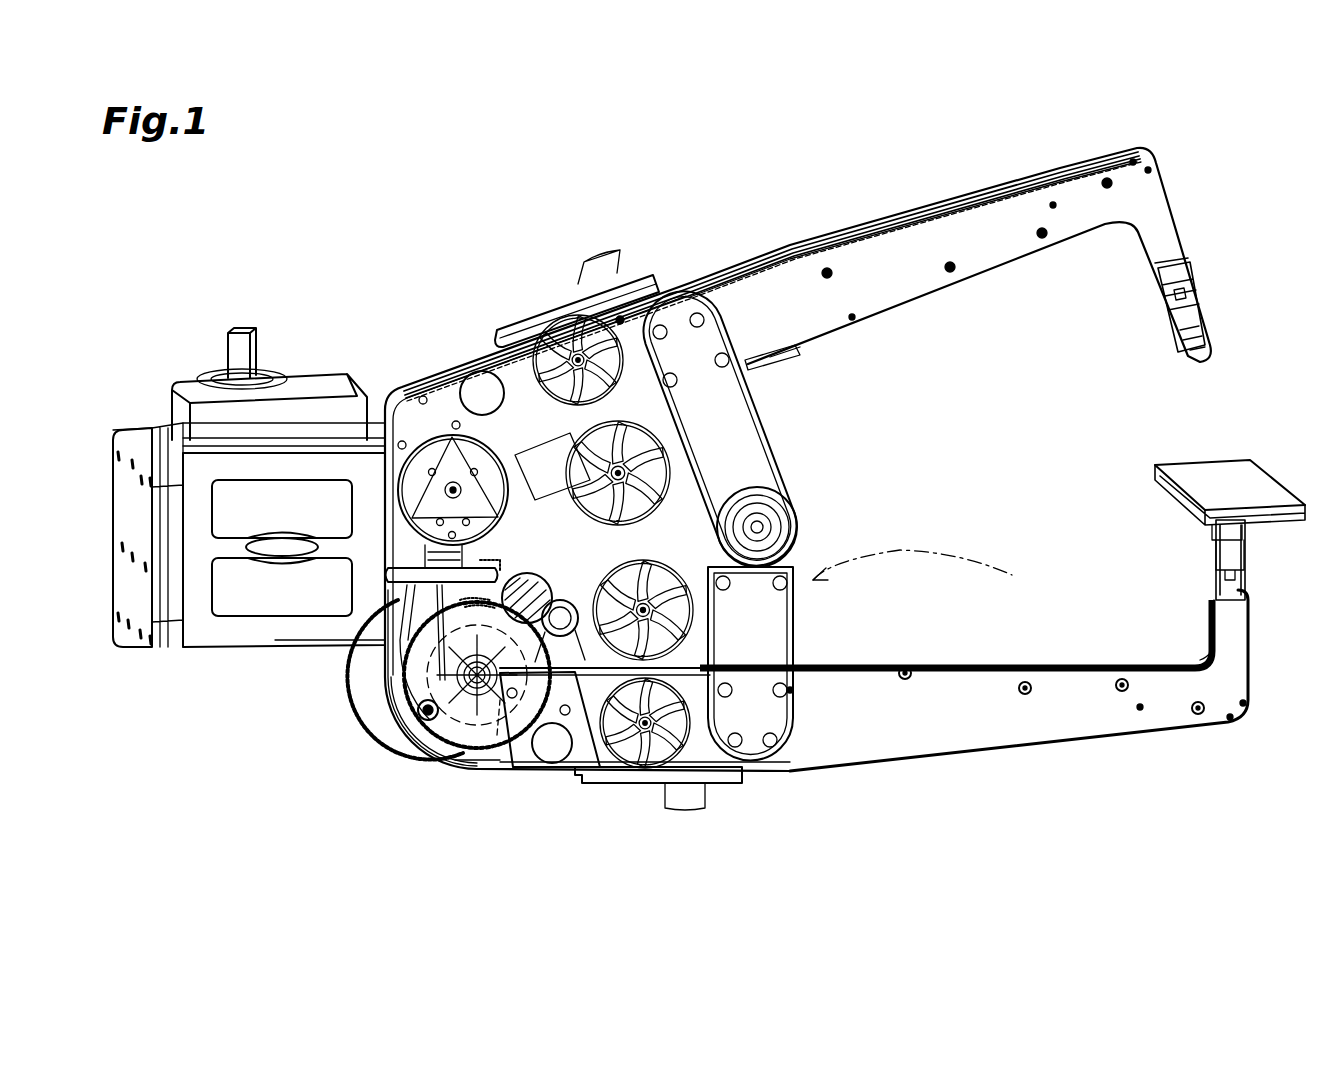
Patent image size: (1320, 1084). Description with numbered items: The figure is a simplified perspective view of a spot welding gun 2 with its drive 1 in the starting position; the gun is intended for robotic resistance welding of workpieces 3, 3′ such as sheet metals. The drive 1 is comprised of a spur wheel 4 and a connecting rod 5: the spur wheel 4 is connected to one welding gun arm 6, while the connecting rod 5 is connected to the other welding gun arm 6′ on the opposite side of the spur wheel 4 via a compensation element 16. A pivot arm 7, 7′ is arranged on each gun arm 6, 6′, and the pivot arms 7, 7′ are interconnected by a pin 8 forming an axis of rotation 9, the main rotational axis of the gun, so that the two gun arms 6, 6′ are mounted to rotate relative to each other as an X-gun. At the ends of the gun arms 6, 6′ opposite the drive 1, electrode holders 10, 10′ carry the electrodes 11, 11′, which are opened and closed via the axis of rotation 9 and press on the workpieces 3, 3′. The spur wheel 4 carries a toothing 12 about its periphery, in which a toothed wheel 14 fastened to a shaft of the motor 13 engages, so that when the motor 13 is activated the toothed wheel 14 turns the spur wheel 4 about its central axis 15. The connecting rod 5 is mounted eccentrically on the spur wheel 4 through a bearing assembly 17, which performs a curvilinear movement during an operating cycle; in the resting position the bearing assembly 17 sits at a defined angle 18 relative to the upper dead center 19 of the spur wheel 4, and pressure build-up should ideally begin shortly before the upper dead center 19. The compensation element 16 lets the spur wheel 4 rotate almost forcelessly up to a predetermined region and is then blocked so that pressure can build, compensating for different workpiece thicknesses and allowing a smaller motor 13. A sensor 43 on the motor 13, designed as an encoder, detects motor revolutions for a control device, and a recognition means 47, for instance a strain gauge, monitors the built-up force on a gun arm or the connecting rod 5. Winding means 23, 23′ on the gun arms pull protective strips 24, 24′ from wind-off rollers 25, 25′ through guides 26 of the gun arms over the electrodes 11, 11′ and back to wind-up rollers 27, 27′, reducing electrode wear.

The drive 1 is at (383, 368).
The spot welding gun 2 is at (380, 265).
The workpiece 3 is at (1203, 500).
The workpiece 3′ is at (1213, 478).
The spur wheel 4 is at (452, 733).
The connecting rod 5 is at (380, 628).
The welding gun arm 6 is at (973, 712).
The welding gun arm 6′ is at (886, 255).
The pivot arm 7 is at (757, 708).
The pivot arm 7′ is at (703, 385).
The pin 8 is at (770, 520).
The axis of rotation 9 is at (925, 575).
The electrode holder 10 is at (1228, 563).
The electrode holder 10′ is at (1172, 310).
The electrode 11 is at (1215, 530).
The electrode 11′ is at (1207, 355).
The toothing 12 is at (417, 748).
The motor 13 is at (548, 640).
The toothed wheel 14 is at (497, 735).
The central axis 15 is at (520, 700).
The compensation element 16 is at (421, 465).
The bearing assembly 17 is at (397, 725).
The angle 18 is at (437, 678).
The upper dead center 19 is at (430, 653).
The winding means 23 is at (722, 800).
The winding means 23′ is at (518, 305).
The strip 24 is at (1220, 547).
The strip 24′ is at (1172, 318).
The wind-off roller 25 is at (646, 762).
The wind-off roller 25′ is at (566, 320).
The guide 26 is at (1105, 665).
The wind-up roller 27 is at (656, 613).
The wind-up roller 27′ is at (682, 472).
The sensor 43 is at (566, 626).
The means for the recognition of the built-up force 47 is at (808, 368).